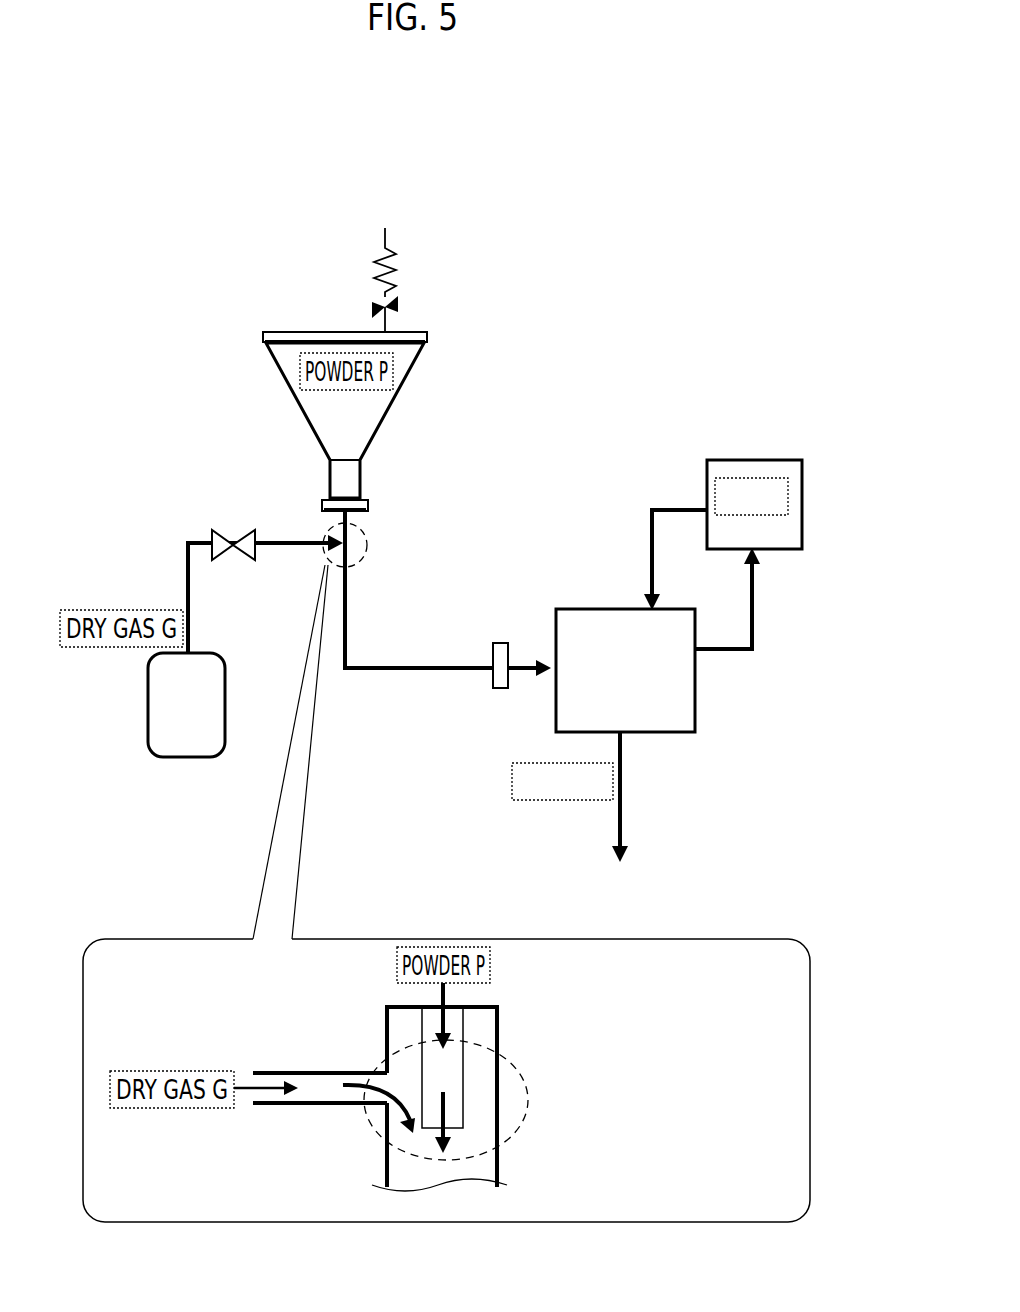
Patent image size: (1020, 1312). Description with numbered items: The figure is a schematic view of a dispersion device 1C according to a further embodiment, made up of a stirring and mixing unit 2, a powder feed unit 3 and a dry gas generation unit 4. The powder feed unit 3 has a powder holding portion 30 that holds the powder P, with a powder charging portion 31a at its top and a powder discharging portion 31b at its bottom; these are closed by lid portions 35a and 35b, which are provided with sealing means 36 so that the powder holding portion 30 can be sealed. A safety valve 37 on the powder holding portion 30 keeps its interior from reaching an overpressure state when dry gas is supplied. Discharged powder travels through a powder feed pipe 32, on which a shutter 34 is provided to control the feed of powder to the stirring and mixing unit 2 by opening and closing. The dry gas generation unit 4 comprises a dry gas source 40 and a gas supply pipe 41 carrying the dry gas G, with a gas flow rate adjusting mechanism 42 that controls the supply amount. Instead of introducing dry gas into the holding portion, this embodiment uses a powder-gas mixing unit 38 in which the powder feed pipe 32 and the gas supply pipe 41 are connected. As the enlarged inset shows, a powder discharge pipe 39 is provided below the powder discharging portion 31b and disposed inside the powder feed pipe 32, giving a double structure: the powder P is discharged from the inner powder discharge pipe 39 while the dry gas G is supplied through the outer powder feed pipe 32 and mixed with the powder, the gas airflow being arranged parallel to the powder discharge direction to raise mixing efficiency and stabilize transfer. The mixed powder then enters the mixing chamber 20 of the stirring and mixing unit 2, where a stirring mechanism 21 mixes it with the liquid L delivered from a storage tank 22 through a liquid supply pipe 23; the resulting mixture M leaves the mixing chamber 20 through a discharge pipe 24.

The dispersion device 1C is at (578, 204).
The stirring and mixing unit 2 is at (708, 840).
The powder feed unit 3 is at (272, 288).
The dry gas generation unit 4 is at (140, 838).
The mixing chamber 20 is at (746, 778).
The stirring mechanism 21 is at (665, 691).
The storage tank 22 is at (752, 472).
The liquid supply pipe 23 is at (650, 572).
The discharge pipe 24 is at (612, 828).
The powder holding portion 30 is at (292, 391).
The powder charging portion 31a is at (258, 346).
The powder discharging portion 31b is at (322, 486).
The powder feed pipe 32 is at (400, 662).
The shutter 34 is at (500, 690).
The lid portion 35a is at (428, 336).
The lid portion 35b is at (372, 504).
The sealing means 36 is at (354, 490).
The safety valve 37 is at (408, 283).
The powder-gas mixing unit 38 is at (376, 544).
The powder discharge pipe 39 is at (455, 1066).
The dry gas source 40 is at (184, 758).
The gas supply pipe 41 is at (186, 570).
The gas flow rate adjusting mechanism 42 is at (232, 540).